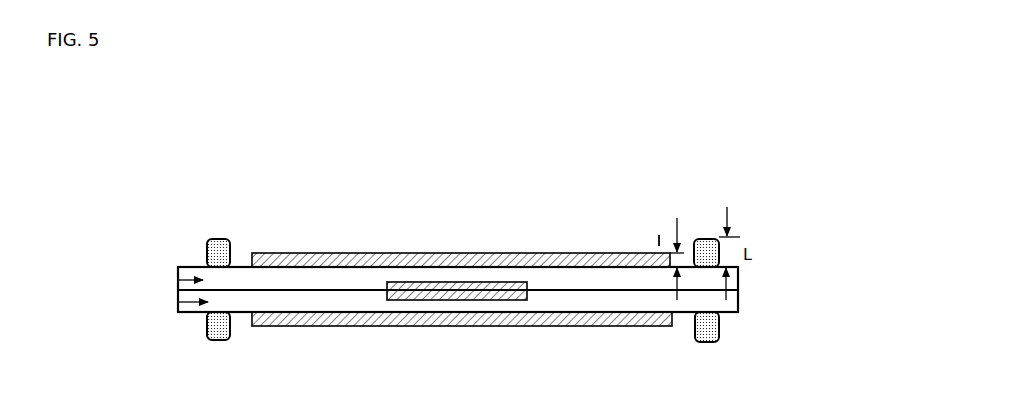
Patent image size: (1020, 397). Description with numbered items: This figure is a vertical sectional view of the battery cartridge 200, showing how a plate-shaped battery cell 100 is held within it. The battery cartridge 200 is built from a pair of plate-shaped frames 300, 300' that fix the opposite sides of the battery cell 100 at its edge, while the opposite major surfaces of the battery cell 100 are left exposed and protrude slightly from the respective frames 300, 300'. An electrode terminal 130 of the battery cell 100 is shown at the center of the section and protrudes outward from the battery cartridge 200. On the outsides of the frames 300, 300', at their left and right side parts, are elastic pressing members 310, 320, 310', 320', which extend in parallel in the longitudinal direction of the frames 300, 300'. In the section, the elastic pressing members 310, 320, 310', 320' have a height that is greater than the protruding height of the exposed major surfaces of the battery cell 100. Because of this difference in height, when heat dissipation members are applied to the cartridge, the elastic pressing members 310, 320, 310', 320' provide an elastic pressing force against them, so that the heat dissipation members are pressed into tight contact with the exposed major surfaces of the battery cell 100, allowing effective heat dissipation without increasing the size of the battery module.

The battery cartridge 200 is at (90, 101).
The battery cell 100 is at (617, 255).
The electrode terminal 130 is at (462, 287).
The frame 300 is at (144, 297).
The frame 300' is at (150, 328).
The elastic pressing member 310 is at (151, 248).
The elastic pressing member 310' is at (161, 354).
The elastic pressing member 320 is at (732, 207).
The elastic pressing member 320' is at (757, 349).